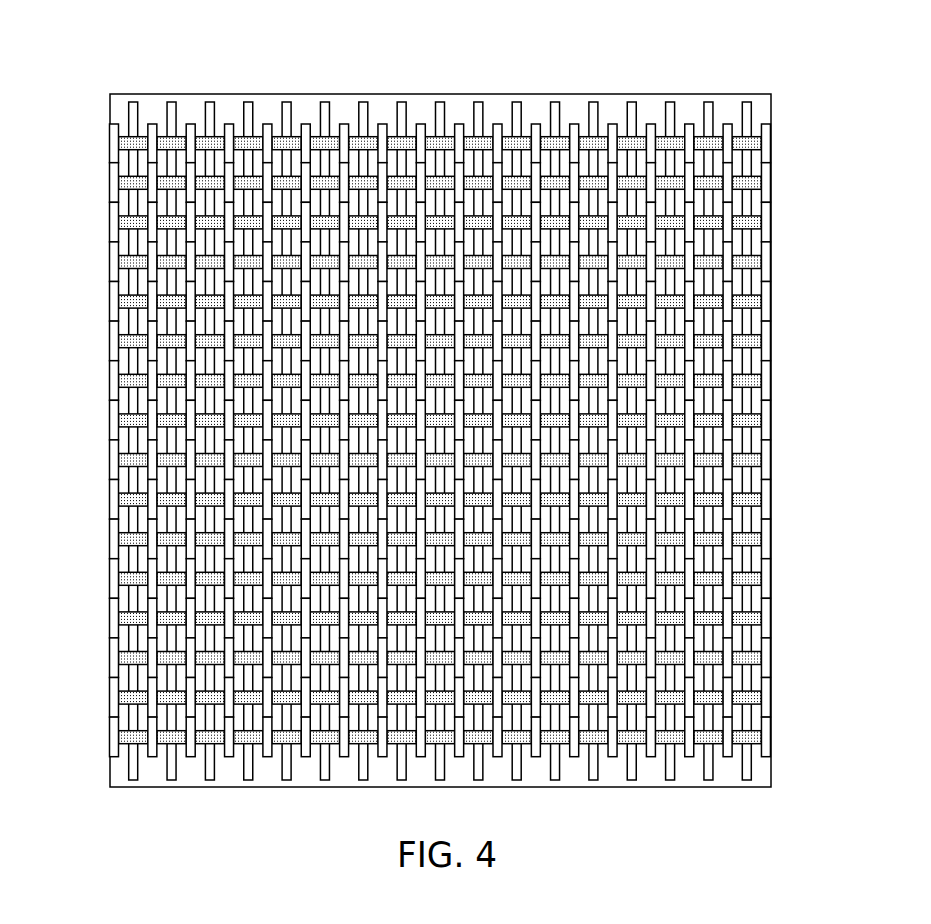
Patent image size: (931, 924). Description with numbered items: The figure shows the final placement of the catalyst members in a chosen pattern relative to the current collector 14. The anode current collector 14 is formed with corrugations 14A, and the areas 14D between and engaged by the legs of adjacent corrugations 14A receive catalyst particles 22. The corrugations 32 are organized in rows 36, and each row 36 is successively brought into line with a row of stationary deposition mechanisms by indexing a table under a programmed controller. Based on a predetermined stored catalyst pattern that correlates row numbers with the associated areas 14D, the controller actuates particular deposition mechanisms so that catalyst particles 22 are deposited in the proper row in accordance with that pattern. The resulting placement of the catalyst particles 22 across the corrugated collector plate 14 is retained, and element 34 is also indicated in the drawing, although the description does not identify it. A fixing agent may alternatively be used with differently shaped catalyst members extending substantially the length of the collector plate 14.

The current collector 14 is at (89, 25).
The corrugations 14A is at (573, 125).
The areas 14D is at (582, 125).
The catalyst particles 22 is at (760, 213).
The corrugations 32 is at (176, 123).
The warp strip 34 is at (755, 105).
The rows 36 is at (147, 108).